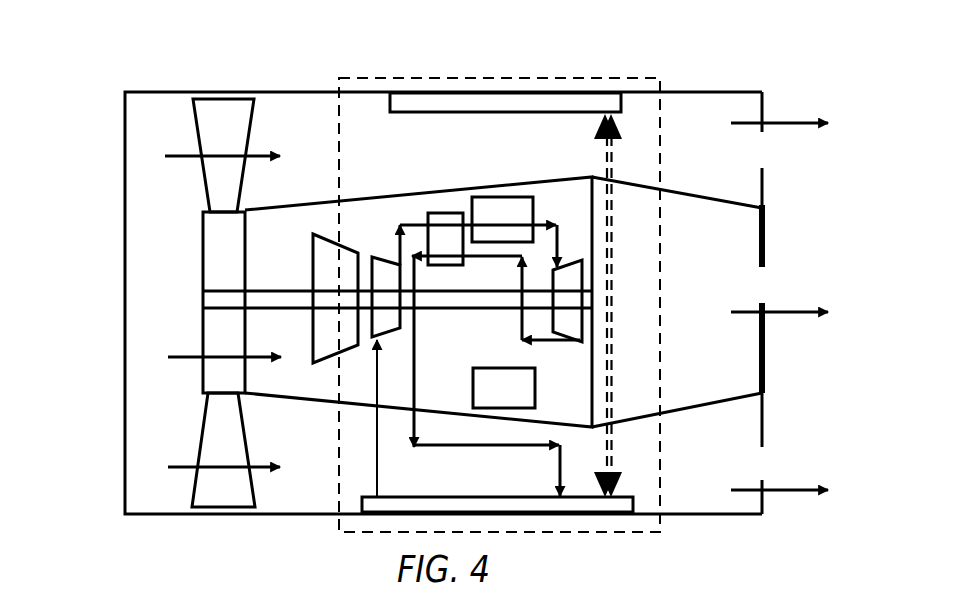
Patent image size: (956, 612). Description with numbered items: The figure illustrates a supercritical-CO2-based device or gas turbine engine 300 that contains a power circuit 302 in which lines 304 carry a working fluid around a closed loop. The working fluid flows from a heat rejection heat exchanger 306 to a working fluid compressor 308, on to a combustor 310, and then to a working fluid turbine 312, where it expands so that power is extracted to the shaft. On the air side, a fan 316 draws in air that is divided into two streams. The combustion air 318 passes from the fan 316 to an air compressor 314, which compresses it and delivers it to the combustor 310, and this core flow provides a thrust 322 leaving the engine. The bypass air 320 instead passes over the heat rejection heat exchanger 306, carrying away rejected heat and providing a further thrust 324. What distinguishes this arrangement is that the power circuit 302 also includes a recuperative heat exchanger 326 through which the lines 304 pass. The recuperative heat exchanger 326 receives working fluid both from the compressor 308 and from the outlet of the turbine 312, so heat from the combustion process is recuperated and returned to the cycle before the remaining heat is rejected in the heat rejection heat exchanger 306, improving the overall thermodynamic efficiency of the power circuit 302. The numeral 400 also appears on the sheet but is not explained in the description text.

The gas turbine engine 300 is at (737, 58).
The power circuit 302 is at (368, 77).
The lines 304 is at (493, 257).
The heat rejection heat exchanger 306 is at (603, 92).
The working fluid compressor 308 is at (386, 256).
The combustor 310 is at (502, 196).
The working fluid turbine 312 is at (574, 258).
The air compressor 314 is at (322, 364).
The fan 316 is at (204, 172).
The combustion air 318 is at (182, 360).
The bypass air 320 is at (174, 153).
The thrust 322 is at (800, 310).
The thrust 324 is at (800, 121).
The recuperative heat exchanger 326 is at (445, 212).
The aircraft configuration 400 is at (694, 602).